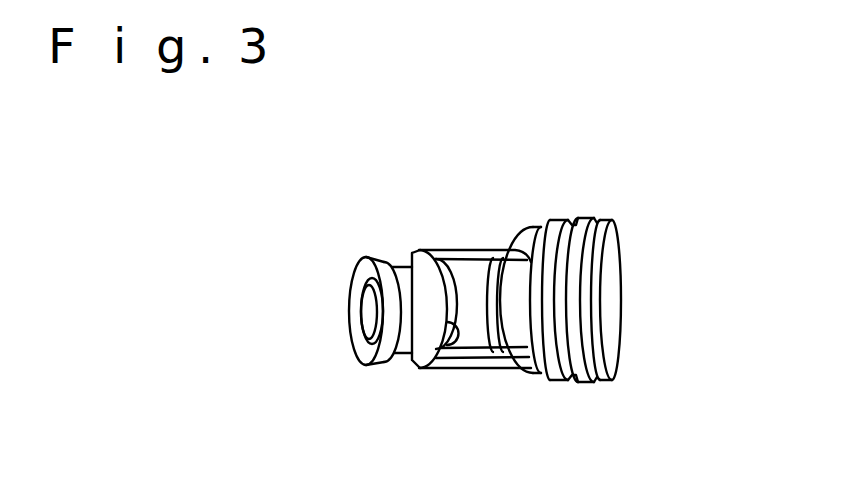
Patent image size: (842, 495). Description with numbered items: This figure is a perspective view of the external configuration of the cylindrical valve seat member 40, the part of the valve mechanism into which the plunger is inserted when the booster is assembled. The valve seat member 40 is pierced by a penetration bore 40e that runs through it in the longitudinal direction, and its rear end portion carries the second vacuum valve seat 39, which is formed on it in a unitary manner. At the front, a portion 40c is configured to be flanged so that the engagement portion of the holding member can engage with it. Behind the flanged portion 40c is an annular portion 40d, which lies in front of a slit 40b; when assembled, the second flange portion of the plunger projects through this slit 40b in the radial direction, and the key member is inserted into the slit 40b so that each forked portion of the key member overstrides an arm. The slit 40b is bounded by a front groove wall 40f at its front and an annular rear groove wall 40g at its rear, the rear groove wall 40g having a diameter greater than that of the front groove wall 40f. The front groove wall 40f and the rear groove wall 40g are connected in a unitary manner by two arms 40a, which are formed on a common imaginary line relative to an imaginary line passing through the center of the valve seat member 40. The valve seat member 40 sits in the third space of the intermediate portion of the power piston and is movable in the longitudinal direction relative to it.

The second vacuum valve seat 39 is at (593, 227).
The valve seat member 40 is at (628, 280).
The arms 40a is at (455, 256).
The slit 40b is at (467, 290).
The flanged portion 40c is at (371, 257).
The annular portion 40d is at (393, 264).
The penetration bore 40e is at (373, 317).
The front groove wall 40f is at (458, 335).
The rear groove wall 40g is at (553, 295).